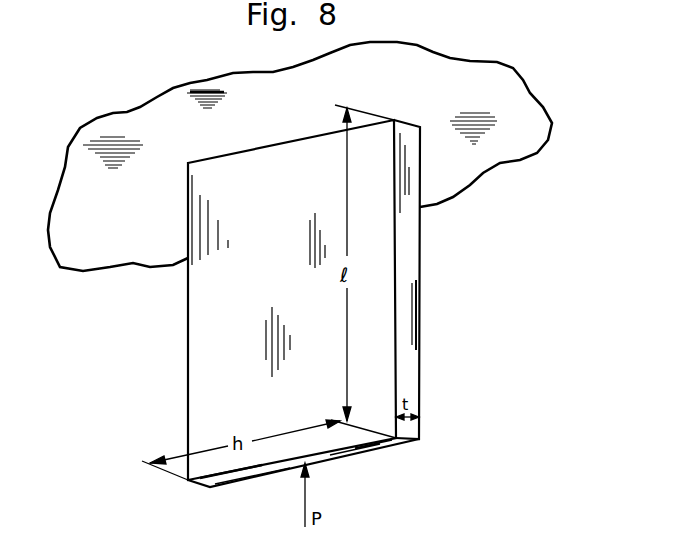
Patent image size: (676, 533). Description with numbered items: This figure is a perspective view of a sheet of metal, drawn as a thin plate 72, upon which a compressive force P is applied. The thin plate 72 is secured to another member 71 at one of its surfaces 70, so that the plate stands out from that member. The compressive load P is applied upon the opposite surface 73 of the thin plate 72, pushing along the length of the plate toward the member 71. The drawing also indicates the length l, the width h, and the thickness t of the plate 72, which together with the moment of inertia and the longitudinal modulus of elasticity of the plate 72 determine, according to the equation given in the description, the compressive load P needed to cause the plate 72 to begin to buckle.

The surface 70 is at (258, 148).
The member 71 is at (118, 216).
The thin plate 72 is at (423, 270).
The surface 73 is at (333, 456).